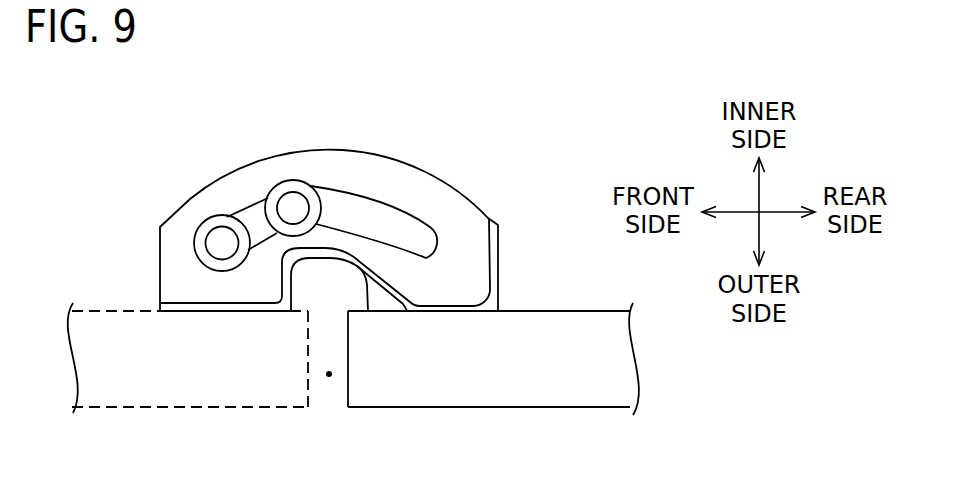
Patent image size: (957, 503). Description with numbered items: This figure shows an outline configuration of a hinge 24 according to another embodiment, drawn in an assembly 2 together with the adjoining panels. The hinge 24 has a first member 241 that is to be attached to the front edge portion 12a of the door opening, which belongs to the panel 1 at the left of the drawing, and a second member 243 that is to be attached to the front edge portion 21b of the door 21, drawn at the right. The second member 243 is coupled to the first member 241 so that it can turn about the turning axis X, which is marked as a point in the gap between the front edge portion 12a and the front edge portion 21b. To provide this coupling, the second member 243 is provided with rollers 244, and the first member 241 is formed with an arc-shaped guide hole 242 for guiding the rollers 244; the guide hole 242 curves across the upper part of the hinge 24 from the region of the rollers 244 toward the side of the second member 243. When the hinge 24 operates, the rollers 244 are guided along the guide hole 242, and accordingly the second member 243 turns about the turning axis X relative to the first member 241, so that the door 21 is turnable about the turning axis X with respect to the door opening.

The first panel 1 is at (122, 407).
The front edge portion of the door opening 12a is at (246, 380).
The holding structure 2 is at (553, 150).
The door 21 is at (572, 407).
The front edge portion of the door 21b is at (412, 382).
The hinge 24 is at (188, 200).
The first member 241 is at (170, 268).
The guide hole 242 is at (388, 208).
The second member 243 is at (492, 300).
The rollers 244 is at (220, 216).
The turning axis X is at (329, 381).